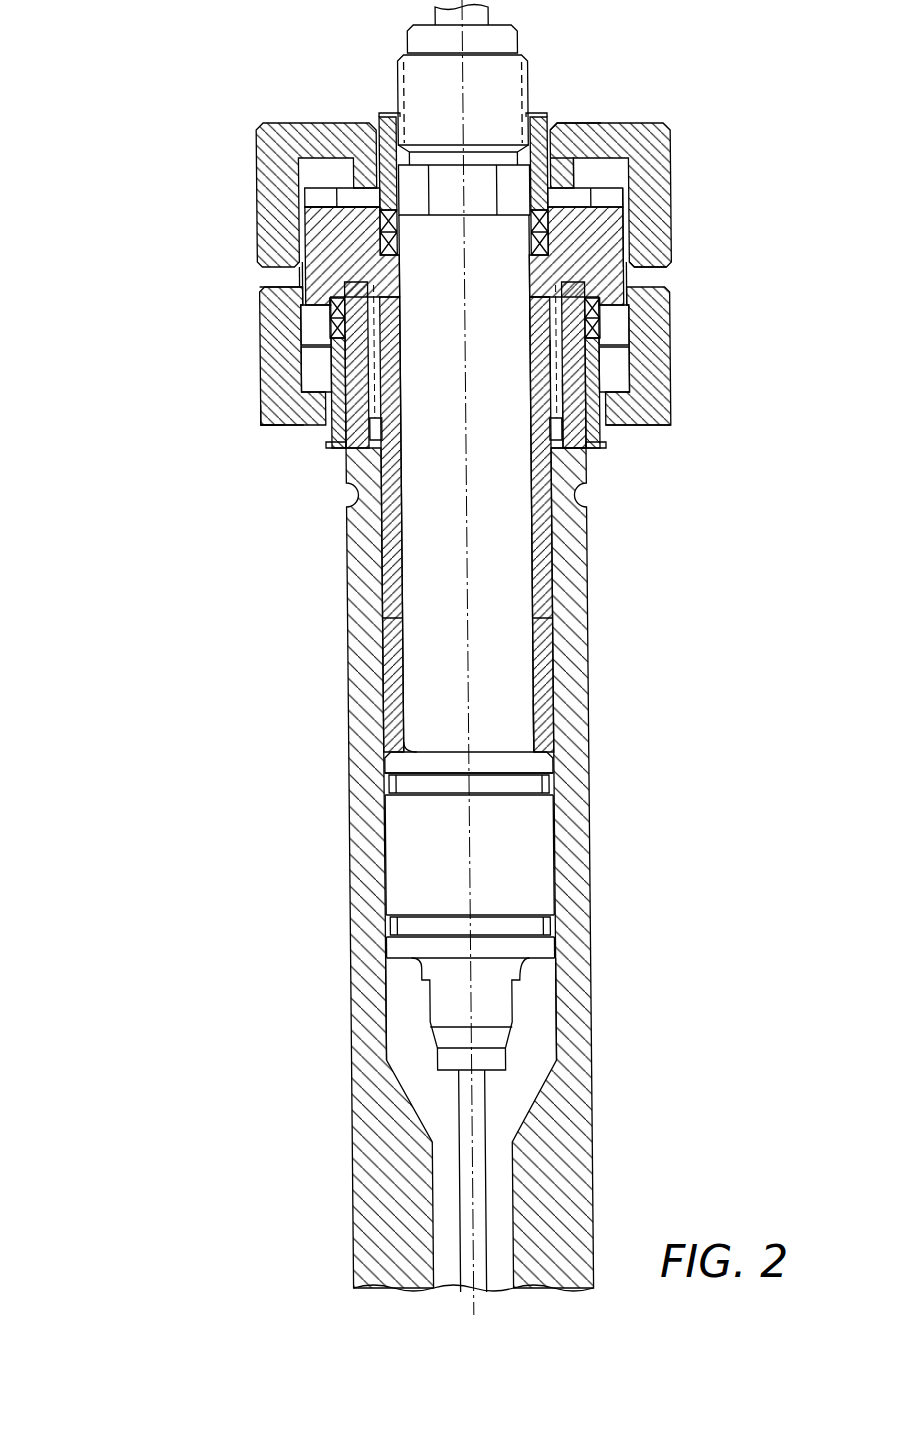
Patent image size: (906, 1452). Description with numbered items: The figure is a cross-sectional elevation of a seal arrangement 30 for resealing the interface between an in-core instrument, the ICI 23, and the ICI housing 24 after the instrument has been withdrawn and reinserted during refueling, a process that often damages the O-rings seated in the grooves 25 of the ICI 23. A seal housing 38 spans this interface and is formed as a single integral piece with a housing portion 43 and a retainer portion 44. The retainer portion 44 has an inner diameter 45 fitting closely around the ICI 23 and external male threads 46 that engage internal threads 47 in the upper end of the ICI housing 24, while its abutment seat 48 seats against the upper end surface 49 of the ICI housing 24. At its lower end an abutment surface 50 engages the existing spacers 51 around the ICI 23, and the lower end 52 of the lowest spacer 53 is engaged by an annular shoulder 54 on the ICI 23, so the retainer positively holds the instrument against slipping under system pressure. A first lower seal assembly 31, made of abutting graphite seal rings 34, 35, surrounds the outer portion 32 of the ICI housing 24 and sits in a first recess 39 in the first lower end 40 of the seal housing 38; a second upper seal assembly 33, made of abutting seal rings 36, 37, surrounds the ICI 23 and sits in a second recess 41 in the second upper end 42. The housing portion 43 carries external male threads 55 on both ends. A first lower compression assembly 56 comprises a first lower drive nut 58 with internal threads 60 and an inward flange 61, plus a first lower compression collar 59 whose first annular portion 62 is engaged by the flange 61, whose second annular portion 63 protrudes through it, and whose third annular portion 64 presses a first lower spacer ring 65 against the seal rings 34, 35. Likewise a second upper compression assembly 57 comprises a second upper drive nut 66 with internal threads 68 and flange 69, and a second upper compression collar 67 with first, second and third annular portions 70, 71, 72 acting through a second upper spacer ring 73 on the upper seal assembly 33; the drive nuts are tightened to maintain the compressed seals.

The ICI 23 is at (507, 663).
The ICI housing 24 is at (577, 840).
The grooves 25 is at (390, 783).
The seal arrangement 30 is at (150, 458).
The first lower seal assembly 31 is at (627, 332).
The outer portion of the ICI housing 32 is at (585, 463).
The second upper seal assembly 33 is at (600, 252).
The seal ring 34 is at (300, 323).
The seal ring 35 is at (297, 287).
The seal ring 36 is at (303, 250).
The seal ring 37 is at (300, 190).
The seal housing 38 is at (300, 235).
The first recess 39 is at (623, 357).
The first lower end 40 is at (258, 367).
The second recess 41 is at (600, 198).
The second upper end 42 is at (310, 197).
The housing portion 43 is at (633, 263).
The retainer portion 44 is at (540, 290).
The inner diameter 45 is at (530, 320).
The external male threads 46 is at (550, 300).
The internal threads 47 is at (552, 393).
The abutment seat 48 is at (633, 315).
The upper end surface 49 is at (368, 277).
The abutment surface 50 is at (547, 347).
The spacers 51 is at (565, 483).
The lower end 52 is at (547, 765).
The lowest spacer 53 is at (553, 727).
The annular shoulder 54 is at (403, 747).
The external male threads 55 is at (297, 277).
The first lower compression assembly 56 is at (265, 420).
The second upper compression assembly 57 is at (268, 126).
The first lower drive nut 58 is at (265, 427).
The first lower compression collar 59 is at (293, 428).
The internal threads 60 is at (640, 320).
The flange 61 is at (632, 418).
The first annular portion 62 is at (305, 380).
The second annular portion 63 is at (340, 452).
The third annular portion 64 is at (337, 360).
The first lower spacer ring 65 is at (300, 342).
The second upper drive nut 66 is at (640, 135).
The second upper compression collar 67 is at (383, 117).
The internal threads 68 is at (627, 228).
The flange 69 is at (562, 133).
The first annular portion 70 is at (560, 165).
The second annular portion 71 is at (540, 115).
The third annular portion 72 is at (580, 200).
The second upper spacer ring 73 is at (345, 205).